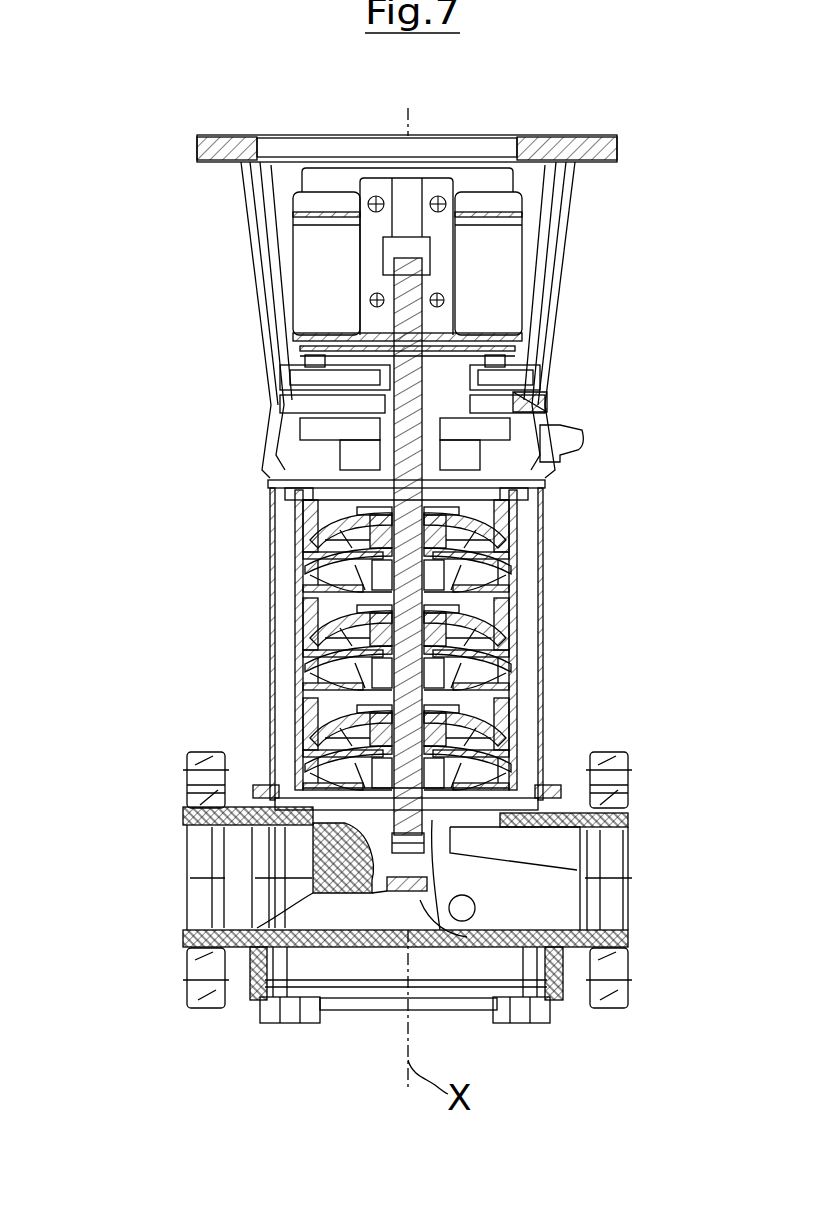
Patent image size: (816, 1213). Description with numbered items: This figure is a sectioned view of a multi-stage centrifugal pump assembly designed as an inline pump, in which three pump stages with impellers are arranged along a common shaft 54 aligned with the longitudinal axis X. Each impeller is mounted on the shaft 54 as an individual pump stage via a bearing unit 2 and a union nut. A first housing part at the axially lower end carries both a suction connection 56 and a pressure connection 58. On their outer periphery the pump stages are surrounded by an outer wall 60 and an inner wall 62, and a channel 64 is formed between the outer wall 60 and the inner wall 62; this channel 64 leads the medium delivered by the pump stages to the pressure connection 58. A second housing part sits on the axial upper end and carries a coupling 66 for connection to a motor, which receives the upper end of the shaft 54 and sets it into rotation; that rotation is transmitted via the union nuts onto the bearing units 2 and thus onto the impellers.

The bearing unit 2 is at (300, 540).
The shaft 54 is at (512, 640).
The suction connection 56 is at (630, 820).
The pressure connection 58 is at (183, 818).
The outer wall 60 is at (543, 595).
The inner wall 62 is at (543, 556).
The channel 64 is at (278, 590).
The coupling 66 is at (447, 268).